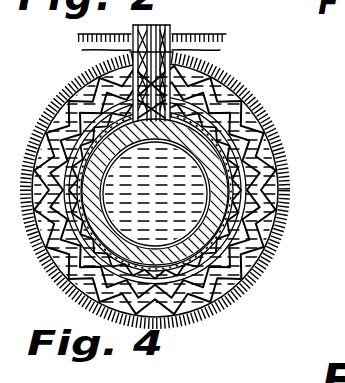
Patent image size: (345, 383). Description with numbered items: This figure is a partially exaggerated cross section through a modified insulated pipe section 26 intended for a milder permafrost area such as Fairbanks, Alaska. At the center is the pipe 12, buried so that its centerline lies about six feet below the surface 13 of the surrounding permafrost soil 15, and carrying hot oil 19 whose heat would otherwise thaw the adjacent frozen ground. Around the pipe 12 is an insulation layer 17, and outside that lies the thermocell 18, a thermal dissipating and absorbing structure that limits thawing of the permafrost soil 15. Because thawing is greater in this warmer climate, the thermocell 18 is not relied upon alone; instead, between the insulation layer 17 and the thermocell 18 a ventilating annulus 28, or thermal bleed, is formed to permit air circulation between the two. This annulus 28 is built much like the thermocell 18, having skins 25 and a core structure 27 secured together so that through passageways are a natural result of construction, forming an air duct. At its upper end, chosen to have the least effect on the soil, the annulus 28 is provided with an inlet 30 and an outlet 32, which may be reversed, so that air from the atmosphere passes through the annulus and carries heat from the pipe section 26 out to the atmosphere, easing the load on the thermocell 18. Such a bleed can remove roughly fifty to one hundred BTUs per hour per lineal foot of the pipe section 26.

The pipe 12 is at (210, 198).
The surface 13 is at (84, 43).
The permafrost soil 15 is at (248, 282).
The insulation layer 17 is at (176, 243).
The thermocell 18 is at (268, 247).
The hot oil 19 is at (155, 189).
The skins 25 is at (262, 140).
The insulated pipe section 26 is at (248, 114).
The core structure 27 is at (268, 171).
The ventilating annulus 28 is at (263, 210).
The inlet 30 is at (138, 26).
The outlet 32 is at (171, 24).